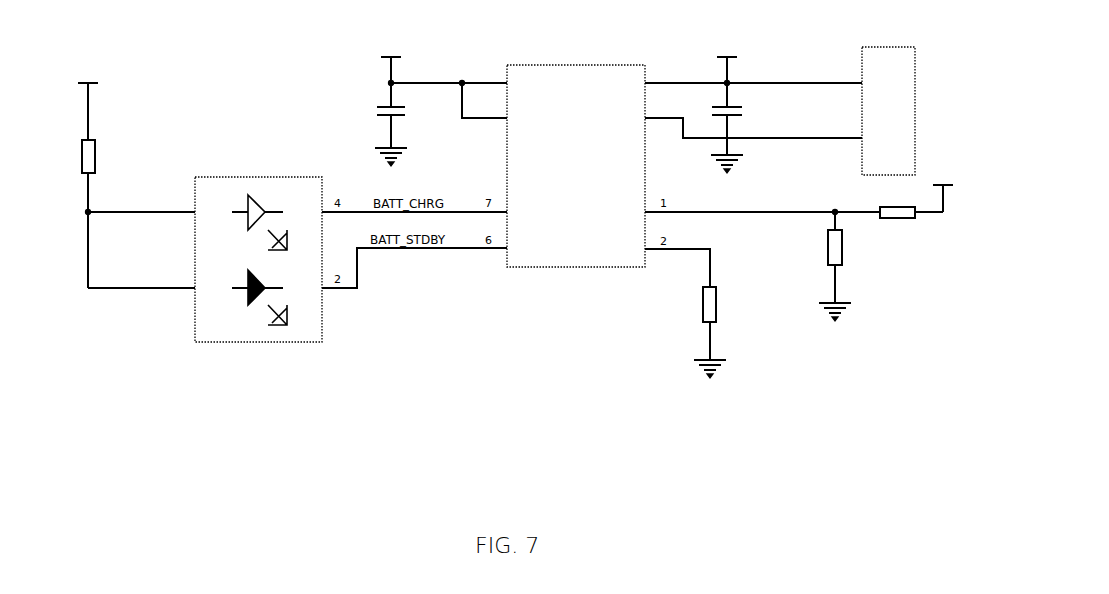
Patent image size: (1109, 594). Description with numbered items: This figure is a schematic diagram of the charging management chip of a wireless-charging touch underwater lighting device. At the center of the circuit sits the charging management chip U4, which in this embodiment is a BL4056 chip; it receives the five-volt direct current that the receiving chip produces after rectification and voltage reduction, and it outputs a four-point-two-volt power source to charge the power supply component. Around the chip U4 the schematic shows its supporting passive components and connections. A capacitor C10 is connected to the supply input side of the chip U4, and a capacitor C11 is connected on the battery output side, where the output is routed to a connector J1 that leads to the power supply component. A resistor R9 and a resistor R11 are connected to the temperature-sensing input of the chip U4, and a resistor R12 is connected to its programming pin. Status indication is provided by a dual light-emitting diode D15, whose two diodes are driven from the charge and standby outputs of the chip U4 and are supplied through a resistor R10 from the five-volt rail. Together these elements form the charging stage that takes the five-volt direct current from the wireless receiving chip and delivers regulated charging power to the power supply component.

The resistor R10 1K R10 is at (135, 179).
The dual LED D15 LED-RG D15 is at (254, 260).
The capacitor C10 1uF C10 is at (441, 104).
The charging management chip U4 is at (576, 176).
The capacitor C11 10uF C11 is at (753, 106).
The connector J1 is at (888, 97).
The resistor R9 100K R9 is at (921, 205).
The resistor R11 200K R11 is at (873, 266).
The resistor R12 1.8K R12 is at (721, 313).